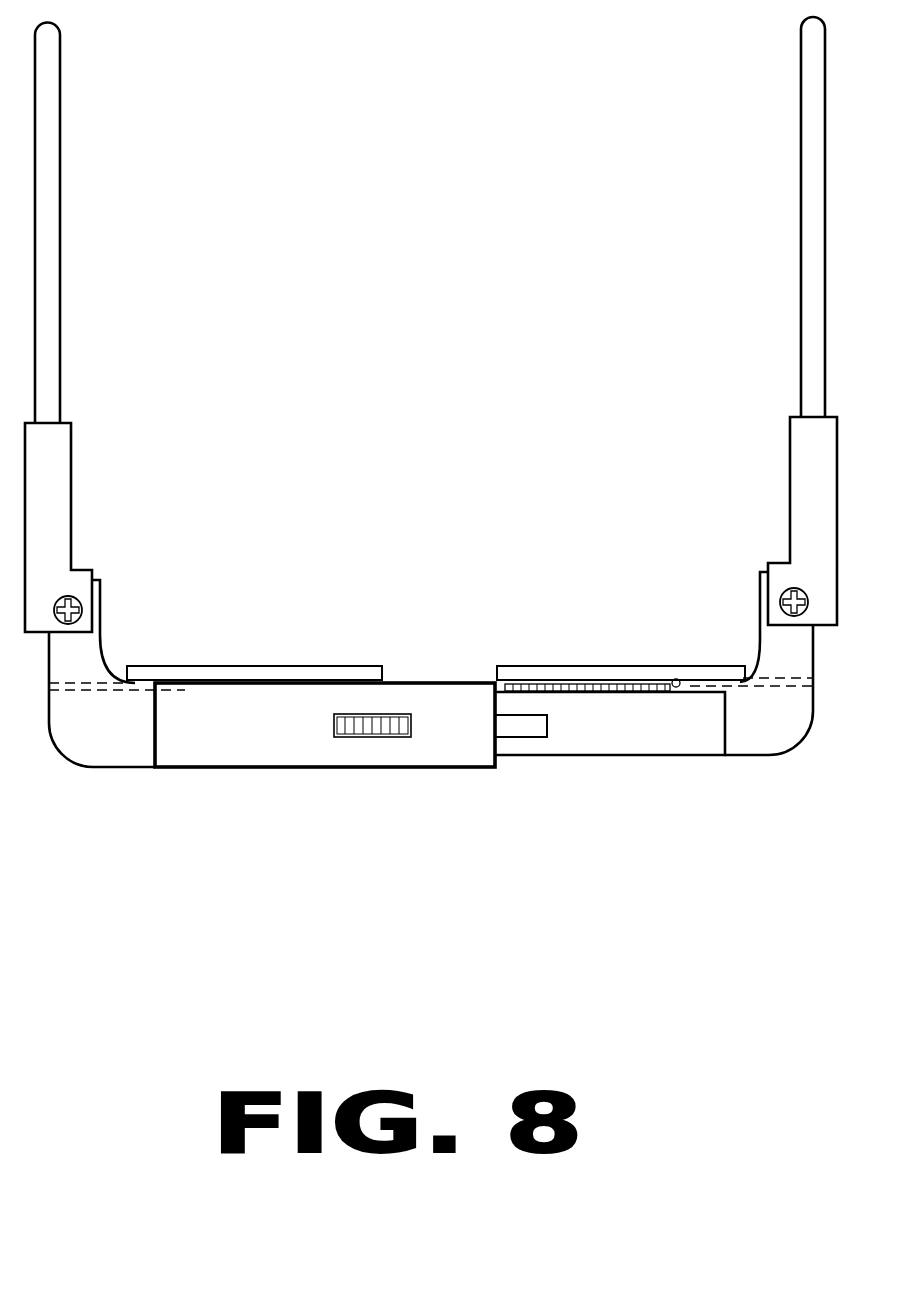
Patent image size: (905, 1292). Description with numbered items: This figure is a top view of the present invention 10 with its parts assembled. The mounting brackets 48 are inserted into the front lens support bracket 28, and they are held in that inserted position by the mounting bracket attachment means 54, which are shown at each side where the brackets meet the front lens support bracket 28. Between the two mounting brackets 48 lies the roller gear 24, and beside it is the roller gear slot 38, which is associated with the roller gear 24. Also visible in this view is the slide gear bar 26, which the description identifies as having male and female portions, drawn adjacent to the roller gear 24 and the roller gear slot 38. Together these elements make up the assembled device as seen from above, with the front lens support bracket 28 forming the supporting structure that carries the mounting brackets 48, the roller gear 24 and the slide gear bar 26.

The present invention 10 is at (431, 506).
The roller gear 24 is at (370, 738).
The slide gear bar 26 is at (458, 757).
The front lens support bracket 28 is at (105, 755).
The roller gear slot 38 is at (524, 738).
The mounting brackets 48 is at (514, 665).
The mounting bracket attachment means 54 is at (88, 688).